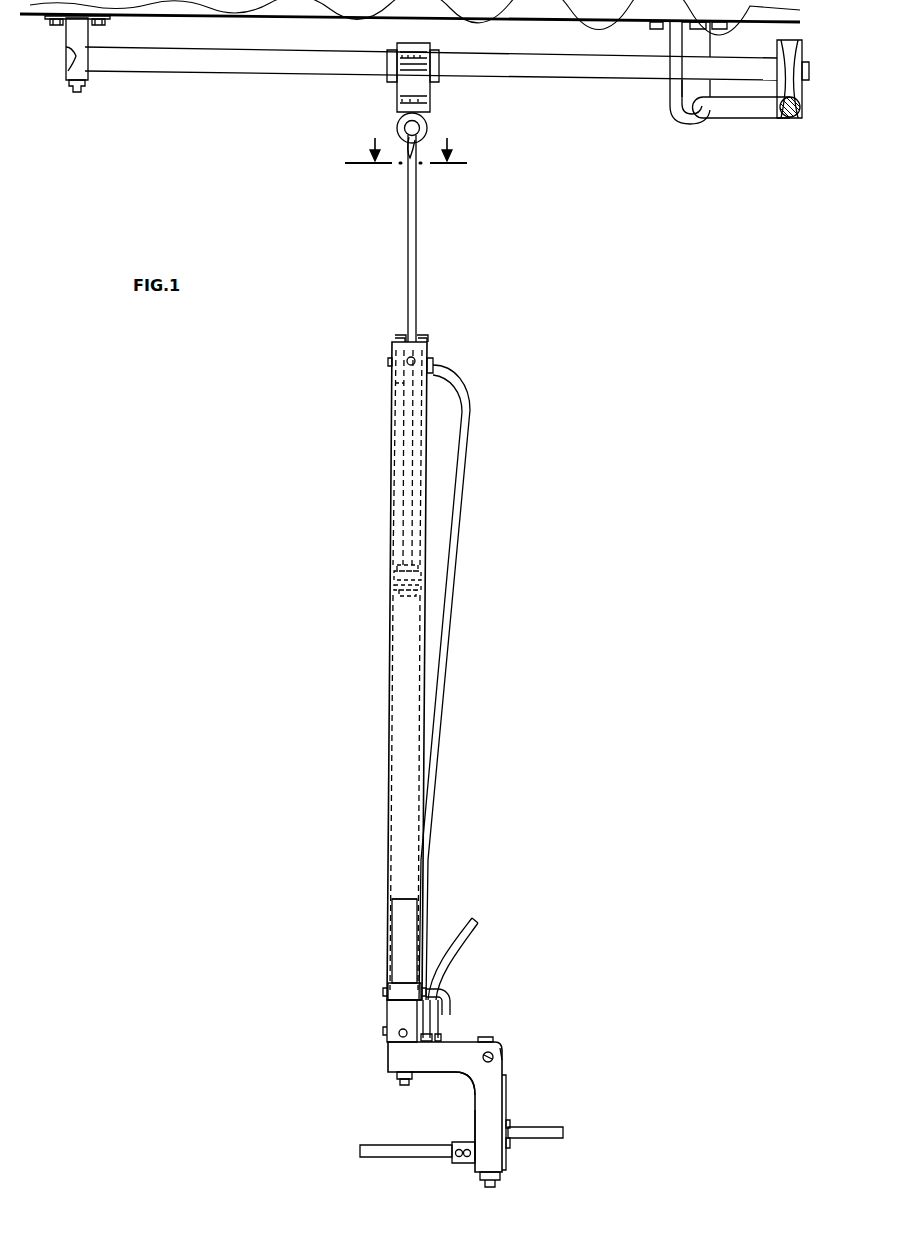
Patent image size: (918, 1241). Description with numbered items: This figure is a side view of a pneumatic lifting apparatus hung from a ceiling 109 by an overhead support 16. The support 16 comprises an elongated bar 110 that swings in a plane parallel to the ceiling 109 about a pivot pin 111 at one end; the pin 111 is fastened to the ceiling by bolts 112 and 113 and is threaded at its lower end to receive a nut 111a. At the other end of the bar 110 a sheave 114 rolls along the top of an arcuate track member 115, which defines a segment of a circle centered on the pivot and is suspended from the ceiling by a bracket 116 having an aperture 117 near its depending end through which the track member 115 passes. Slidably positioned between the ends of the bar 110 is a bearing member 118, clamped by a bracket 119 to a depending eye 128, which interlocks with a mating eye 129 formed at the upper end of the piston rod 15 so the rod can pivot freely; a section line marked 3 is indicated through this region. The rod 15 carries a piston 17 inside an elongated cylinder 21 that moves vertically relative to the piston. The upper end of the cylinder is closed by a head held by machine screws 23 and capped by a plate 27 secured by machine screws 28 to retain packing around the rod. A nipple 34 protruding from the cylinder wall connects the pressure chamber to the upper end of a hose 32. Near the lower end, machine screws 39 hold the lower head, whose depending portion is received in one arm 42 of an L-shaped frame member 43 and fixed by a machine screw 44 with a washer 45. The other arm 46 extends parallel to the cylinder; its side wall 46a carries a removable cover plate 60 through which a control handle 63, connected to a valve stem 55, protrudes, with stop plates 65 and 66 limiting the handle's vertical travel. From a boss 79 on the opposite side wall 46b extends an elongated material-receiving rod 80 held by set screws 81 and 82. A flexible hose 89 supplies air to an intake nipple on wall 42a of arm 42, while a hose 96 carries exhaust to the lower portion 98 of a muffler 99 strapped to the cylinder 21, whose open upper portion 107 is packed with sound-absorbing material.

The ceiling 109 is at (574, 17).
The elongated bar 110 is at (585, 70).
The pivot pin 111 is at (72, 35).
The nut 111a is at (78, 95).
The bolt 112 is at (58, 25).
The bolt 113 is at (103, 25).
The sheave 114 is at (777, 47).
The arcuate track member 115 is at (752, 108).
The bracket 116 is at (676, 108).
The aperture 117 is at (700, 125).
The bearing member 118 is at (436, 50).
The bracket 119 is at (403, 88).
The overhead support 16 is at (411, 86).
The depending eye 128 is at (397, 127).
The mating eye 129 is at (410, 160).
The section line 3- 3 is at (406, 165).
The piston rod 15 is at (418, 242).
The cylinder 21 is at (395, 725).
The plate 27 is at (428, 343).
The machine screws 28 is at (421, 338).
The machine screws 23 is at (434, 364).
The nipple 34 is at (470, 406).
The tube or hose 32 is at (467, 478).
The piston 17 is at (393, 575).
The muffler 99 is at (400, 912).
The upper portion 107 is at (402, 898).
The lower portion 98 is at (403, 990).
The tube or flexible hose 89 is at (472, 925).
The tube or hose 96 is at (449, 1000).
The machine screws 39 is at (390, 1033).
The L-shaped frame member 43 is at (493, 1084).
The wall 42a is at (478, 1040).
The side wall 46a is at (504, 1070).
The side wall 46b is at (472, 1090).
The arm 46 is at (475, 1125).
The arm 42 is at (432, 1073).
The washer 45 is at (397, 1075).
The machine screw 44 is at (400, 1082).
The cover plate 60 is at (506, 1097).
The stop plate 65 is at (510, 1125).
The stop plate 66 is at (508, 1143).
The control handle 63 is at (565, 1132).
The valve stem 55 is at (497, 1182).
The boss 79 is at (455, 1141).
The set screw 81 is at (456, 1158).
The set screw 82 is at (468, 1162).
The elongated rod 80 is at (380, 1152).